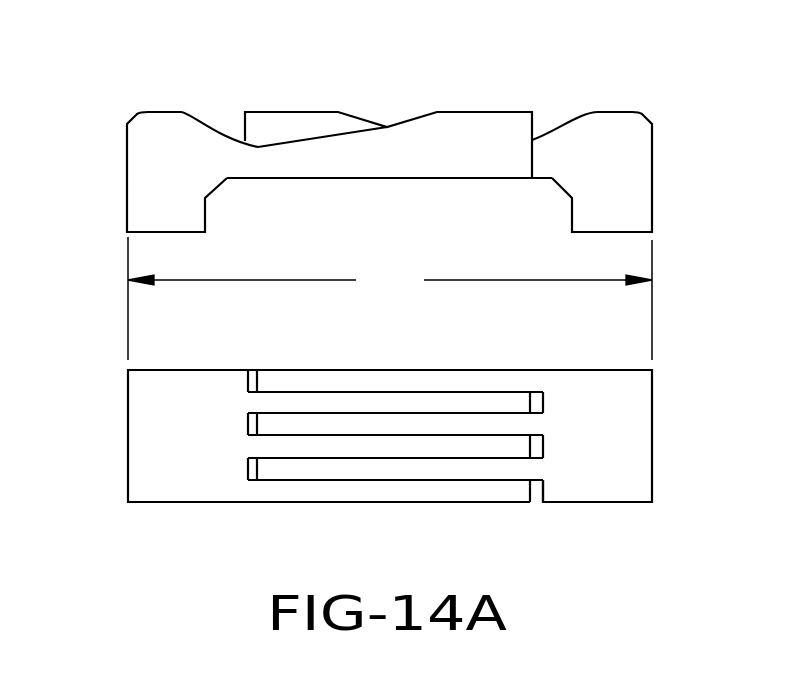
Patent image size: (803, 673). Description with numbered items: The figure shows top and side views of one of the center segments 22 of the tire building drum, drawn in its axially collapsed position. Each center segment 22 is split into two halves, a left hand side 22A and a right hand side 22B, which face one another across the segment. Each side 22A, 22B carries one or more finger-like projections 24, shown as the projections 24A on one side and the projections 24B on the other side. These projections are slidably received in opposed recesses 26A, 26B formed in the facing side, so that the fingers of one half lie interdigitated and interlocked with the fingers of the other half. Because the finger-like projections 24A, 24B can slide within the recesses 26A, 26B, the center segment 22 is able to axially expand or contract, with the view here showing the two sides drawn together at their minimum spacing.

The center segment 22 is at (121, 99).
The left hand side 22A is at (653, 178).
The right hand side 22B is at (126, 178).
The finger-like projection 24 is at (487, 130).
The finger-like projection 24A is at (518, 470).
The finger-like projection 24B is at (273, 492).
The recess 26A is at (538, 488).
The recess 26B is at (248, 470).